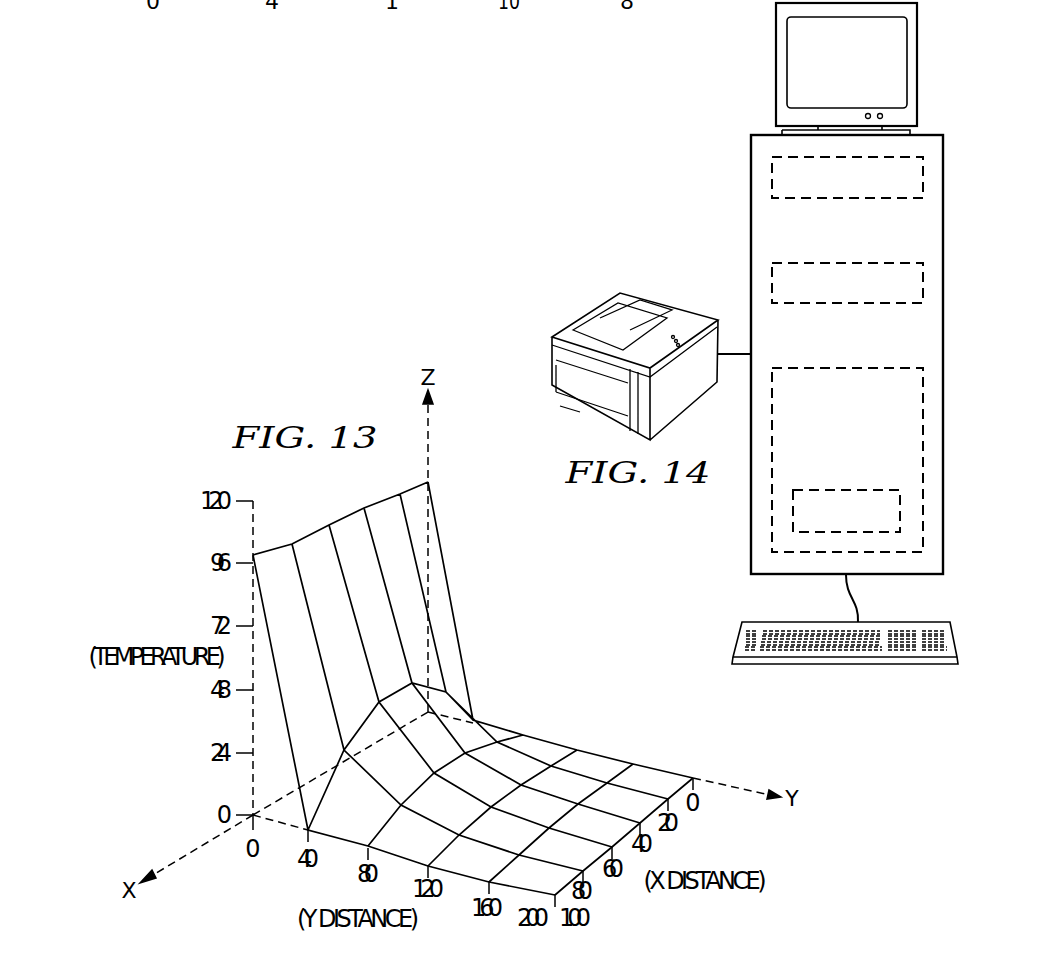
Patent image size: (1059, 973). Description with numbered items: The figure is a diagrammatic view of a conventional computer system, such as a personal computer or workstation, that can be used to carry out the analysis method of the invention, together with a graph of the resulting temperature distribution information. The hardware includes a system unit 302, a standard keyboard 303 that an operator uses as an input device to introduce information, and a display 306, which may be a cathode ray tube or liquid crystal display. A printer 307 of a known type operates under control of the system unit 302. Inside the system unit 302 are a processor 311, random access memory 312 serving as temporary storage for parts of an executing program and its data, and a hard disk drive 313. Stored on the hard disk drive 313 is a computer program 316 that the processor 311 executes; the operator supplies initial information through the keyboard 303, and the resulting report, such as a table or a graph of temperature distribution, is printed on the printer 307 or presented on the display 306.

The system unit 302 is at (750, 227).
The keyboard 303 is at (893, 665).
The display 306 is at (831, 74).
The printer 307 is at (598, 306).
The processor 311 is at (837, 200).
The random access memory (RAM) 312 is at (818, 305).
The hard disk drive (HDD) 313 is at (875, 368).
The computer program 316 is at (837, 490).